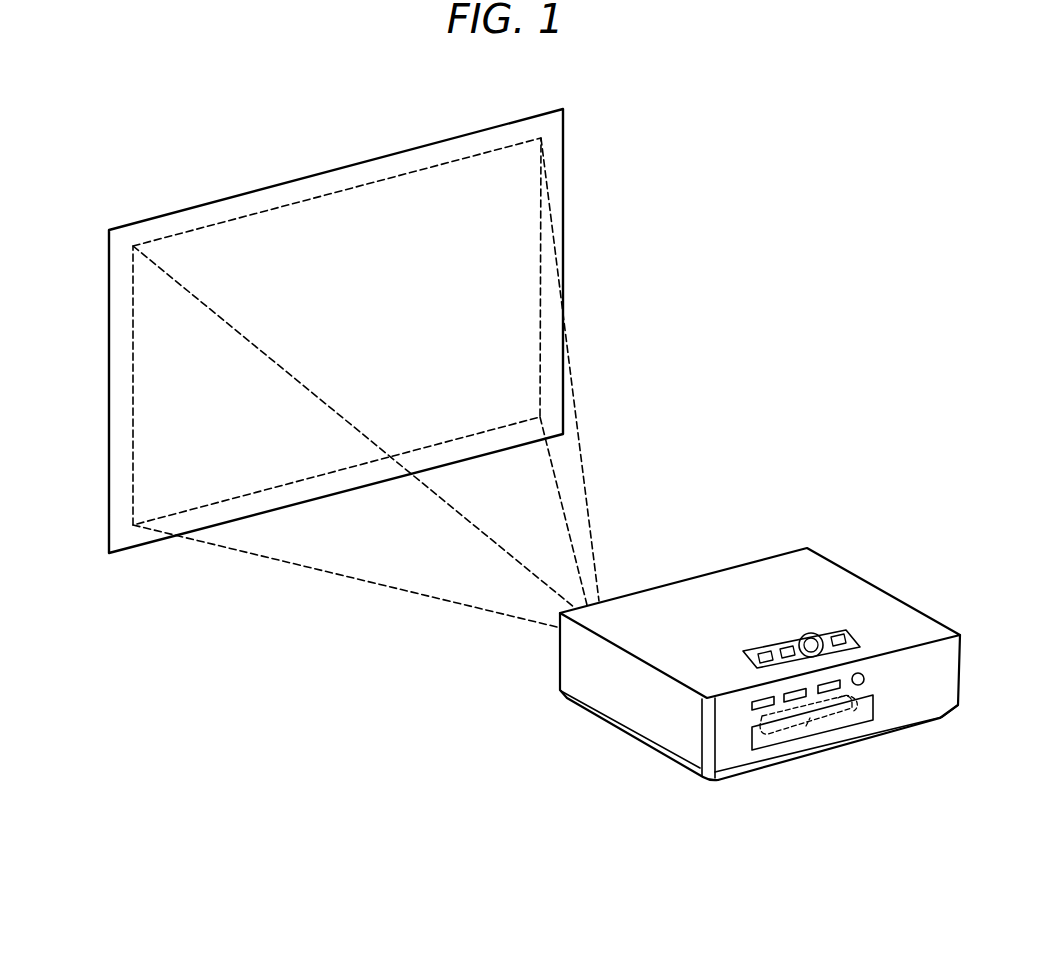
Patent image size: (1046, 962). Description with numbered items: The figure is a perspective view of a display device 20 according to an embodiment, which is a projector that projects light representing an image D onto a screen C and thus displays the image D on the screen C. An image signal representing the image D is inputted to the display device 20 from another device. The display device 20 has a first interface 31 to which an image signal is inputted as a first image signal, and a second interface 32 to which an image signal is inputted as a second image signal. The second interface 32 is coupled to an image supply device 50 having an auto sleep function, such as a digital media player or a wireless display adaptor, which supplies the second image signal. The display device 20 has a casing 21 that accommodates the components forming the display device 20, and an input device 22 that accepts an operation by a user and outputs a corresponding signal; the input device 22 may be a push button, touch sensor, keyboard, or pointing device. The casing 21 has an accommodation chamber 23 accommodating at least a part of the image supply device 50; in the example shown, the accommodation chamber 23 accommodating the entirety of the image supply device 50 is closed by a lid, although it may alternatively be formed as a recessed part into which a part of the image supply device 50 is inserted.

The screen C is at (112, 393).
The image D is at (346, 188).
The display device 20 is at (760, 671).
The casing 21 is at (862, 590).
The input device 22 is at (795, 638).
The accommodation chamber 23 is at (765, 752).
The first interface 31 is at (748, 708).
The second interface 32 is at (856, 716).
The image supply device 50 is at (808, 735).